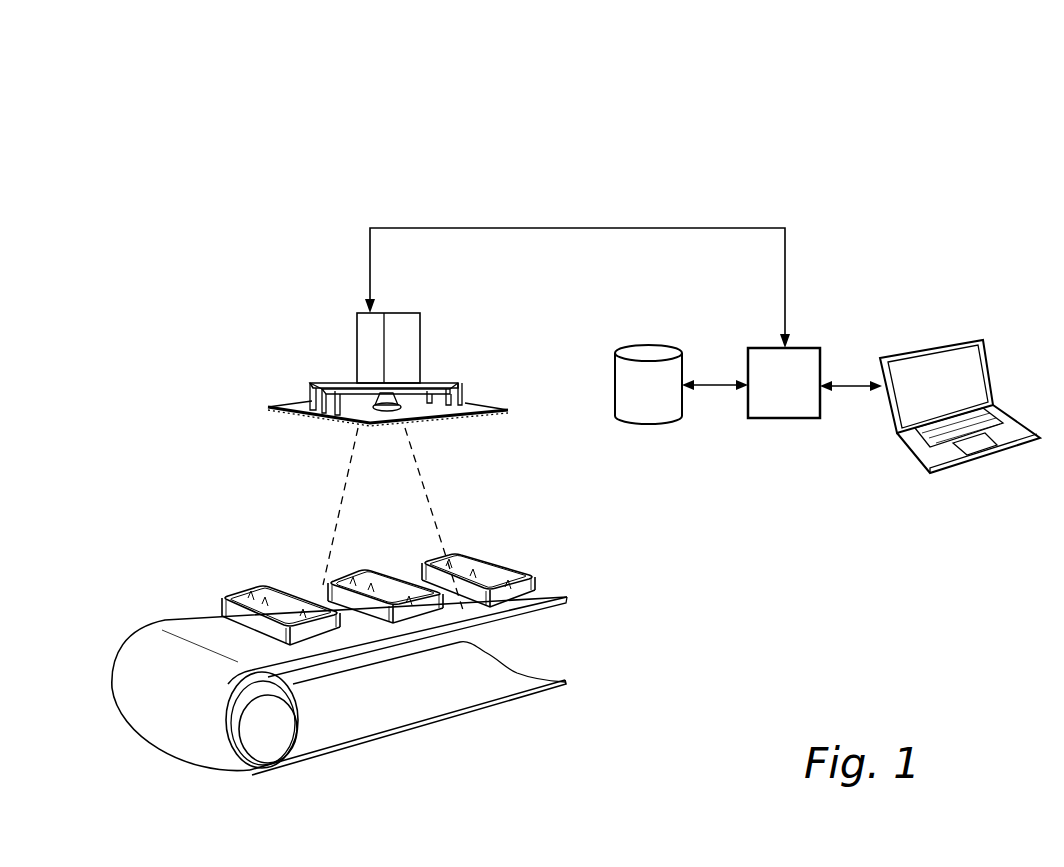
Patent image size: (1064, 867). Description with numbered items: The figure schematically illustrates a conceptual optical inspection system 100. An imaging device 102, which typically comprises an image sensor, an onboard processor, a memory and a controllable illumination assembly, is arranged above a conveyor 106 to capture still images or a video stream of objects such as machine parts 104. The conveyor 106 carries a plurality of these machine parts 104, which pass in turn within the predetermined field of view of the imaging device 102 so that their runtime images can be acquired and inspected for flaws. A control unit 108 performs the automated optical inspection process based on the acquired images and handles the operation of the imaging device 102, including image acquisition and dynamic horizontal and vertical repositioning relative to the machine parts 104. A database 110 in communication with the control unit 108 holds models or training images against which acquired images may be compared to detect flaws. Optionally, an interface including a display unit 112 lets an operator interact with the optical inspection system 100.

The optical inspection system 100 is at (652, 114).
The imaging device 102 is at (412, 342).
The machine parts 104 is at (236, 590).
The conveyor 106 is at (197, 623).
The control unit 108 is at (788, 418).
The database 110 is at (650, 352).
The display unit 112 is at (930, 345).